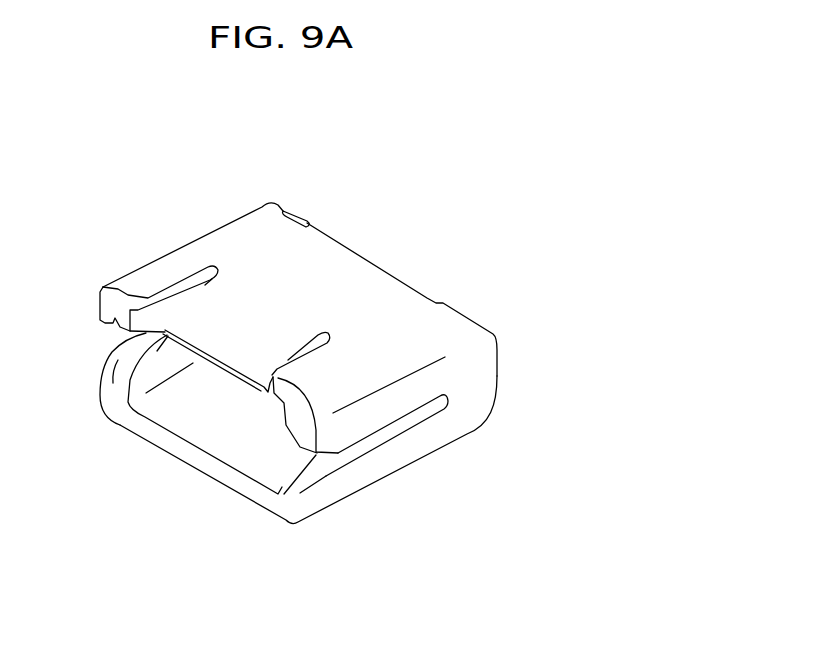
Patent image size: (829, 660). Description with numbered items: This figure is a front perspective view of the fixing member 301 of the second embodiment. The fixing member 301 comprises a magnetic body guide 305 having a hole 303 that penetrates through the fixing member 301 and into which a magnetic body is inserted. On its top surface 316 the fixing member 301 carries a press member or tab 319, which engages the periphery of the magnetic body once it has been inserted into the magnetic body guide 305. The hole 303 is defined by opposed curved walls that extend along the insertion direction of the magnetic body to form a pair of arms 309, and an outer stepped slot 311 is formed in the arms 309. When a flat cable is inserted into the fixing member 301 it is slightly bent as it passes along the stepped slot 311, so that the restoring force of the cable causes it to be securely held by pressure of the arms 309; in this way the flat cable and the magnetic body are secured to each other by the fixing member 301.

The fixing member 301 is at (236, 213).
The hole 303 is at (262, 435).
The magnetic body guide 305 is at (178, 396).
The arms 309 is at (362, 474).
The outer stepped slot 311 is at (371, 442).
The top surface 316 is at (349, 278).
The press member or tab 319 is at (238, 345).